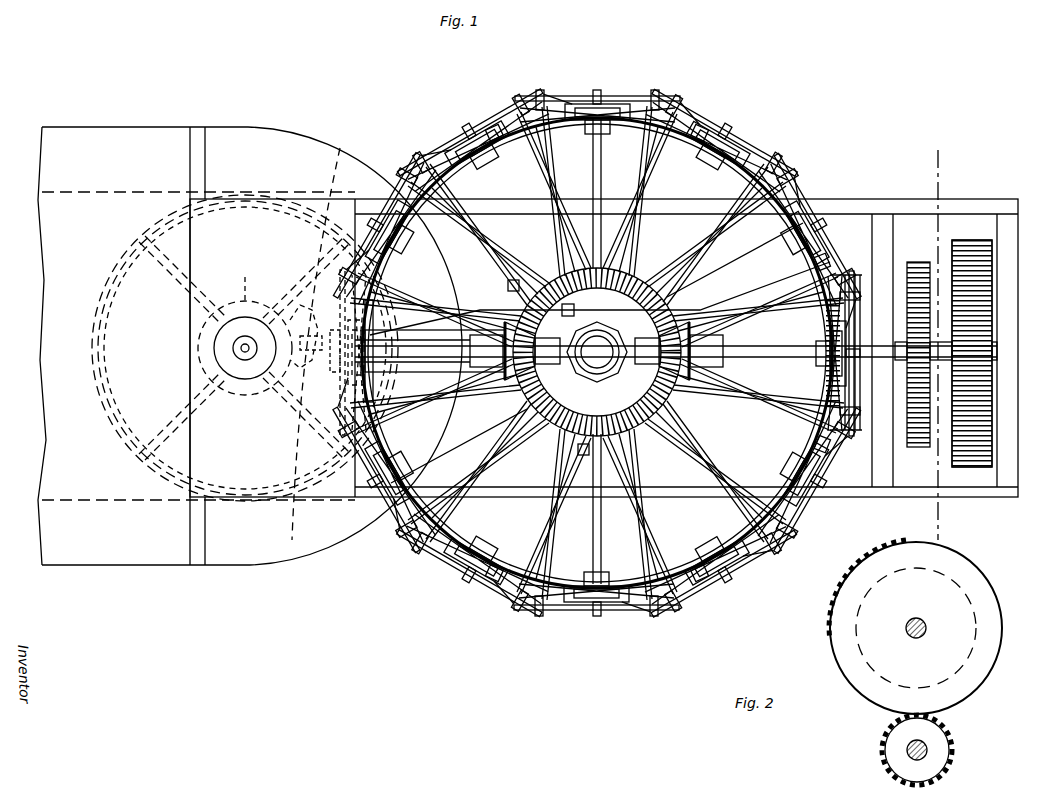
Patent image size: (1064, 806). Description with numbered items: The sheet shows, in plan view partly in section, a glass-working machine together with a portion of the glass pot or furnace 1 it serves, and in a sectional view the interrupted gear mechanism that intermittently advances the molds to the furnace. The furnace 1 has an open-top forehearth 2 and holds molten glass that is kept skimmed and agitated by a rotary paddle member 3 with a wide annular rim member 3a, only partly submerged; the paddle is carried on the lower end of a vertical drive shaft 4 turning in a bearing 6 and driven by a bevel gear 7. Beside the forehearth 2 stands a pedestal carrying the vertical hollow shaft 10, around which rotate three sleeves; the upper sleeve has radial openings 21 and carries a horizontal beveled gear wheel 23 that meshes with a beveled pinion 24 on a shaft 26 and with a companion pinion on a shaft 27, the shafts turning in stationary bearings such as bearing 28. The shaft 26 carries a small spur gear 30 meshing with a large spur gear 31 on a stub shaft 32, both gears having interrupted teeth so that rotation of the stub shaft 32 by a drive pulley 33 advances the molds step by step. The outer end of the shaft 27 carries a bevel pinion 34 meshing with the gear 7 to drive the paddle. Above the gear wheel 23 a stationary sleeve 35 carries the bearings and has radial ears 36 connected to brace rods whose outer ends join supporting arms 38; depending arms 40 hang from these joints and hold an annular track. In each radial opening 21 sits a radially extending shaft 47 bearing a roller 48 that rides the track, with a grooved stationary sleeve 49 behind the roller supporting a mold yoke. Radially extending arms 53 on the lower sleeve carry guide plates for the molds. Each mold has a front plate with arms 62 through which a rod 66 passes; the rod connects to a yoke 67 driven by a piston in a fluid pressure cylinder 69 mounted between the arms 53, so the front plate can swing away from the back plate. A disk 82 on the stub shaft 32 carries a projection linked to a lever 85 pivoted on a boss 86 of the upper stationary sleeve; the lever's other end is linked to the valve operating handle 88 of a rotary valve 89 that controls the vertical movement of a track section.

In FIG. 1, the glass pot or furnace 1 is at (126, 544).
In FIG. 1, the forehearth 2 is at (262, 544).
In FIG. 1, the rotary paddle member 3 is at (212, 400).
In FIG. 1, the annular rim member 3a is at (104, 418).
In FIG. 1, the drive shaft 4 is at (245, 360).
In FIG. 1, the bearing 6 is at (218, 347).
In FIG. 1, the bevel gear 7 is at (242, 277).
In FIG. 1, the bevel pinion 34 is at (306, 333).
In FIG. 1, the hollow shaft 10 is at (505, 102).
In FIG. 1, the radial openings 21 is at (604, 272).
In FIG. 1, the horizontal beveled gear wheel 23 is at (606, 440).
In FIG. 1, the beveled pinion 24 is at (688, 376).
In FIG. 1, the shaft 26 is at (790, 350).
In FIG. 1, the shaft 27 is at (424, 340).
In FIG. 1, the stationary bearing 28 is at (597, 352).
In FIG. 1, the large spur gear 31 is at (970, 378).
In FIG. 2, the large spur gear 31 is at (990, 620).
In FIG. 1, the stub shaft 32 is at (950, 352).
In FIG. 2, the stub shaft 32 is at (926, 620).
In FIG. 1, the drive pulley 33 is at (980, 276).
In FIG. 1, the stationary sleeve 35 is at (566, 372).
In FIG. 1, the radially extending ears 36 is at (594, 380).
In FIG. 1, the supporting arms 38 is at (520, 178).
In FIG. 1, the depending arms 40 is at (708, 604).
In FIG. 1, the radially extending shaft 47 is at (570, 228).
In FIG. 1, the roller 48 is at (604, 100).
In FIG. 1, the stationary sleeve 49 is at (780, 556).
In FIG. 1, the radially extending arms 53 is at (482, 198).
In FIG. 1, the arms 62 is at (460, 124).
In FIG. 1, the rod 66 is at (574, 96).
In FIG. 1, the yoke 67 is at (624, 180).
In FIG. 1, the fluid pressure cylinder 69 is at (506, 287).
In FIG. 1, the disk 82 is at (846, 290).
In FIG. 1, the lever 85 is at (720, 308).
In FIG. 1, the boss or projection 86 is at (564, 316).
In FIG. 1, the valve operating handle 88 is at (435, 351).
In FIG. 1, the rotary valve 89 is at (348, 358).
In FIG. 2, the small spur gear 30 is at (940, 746).